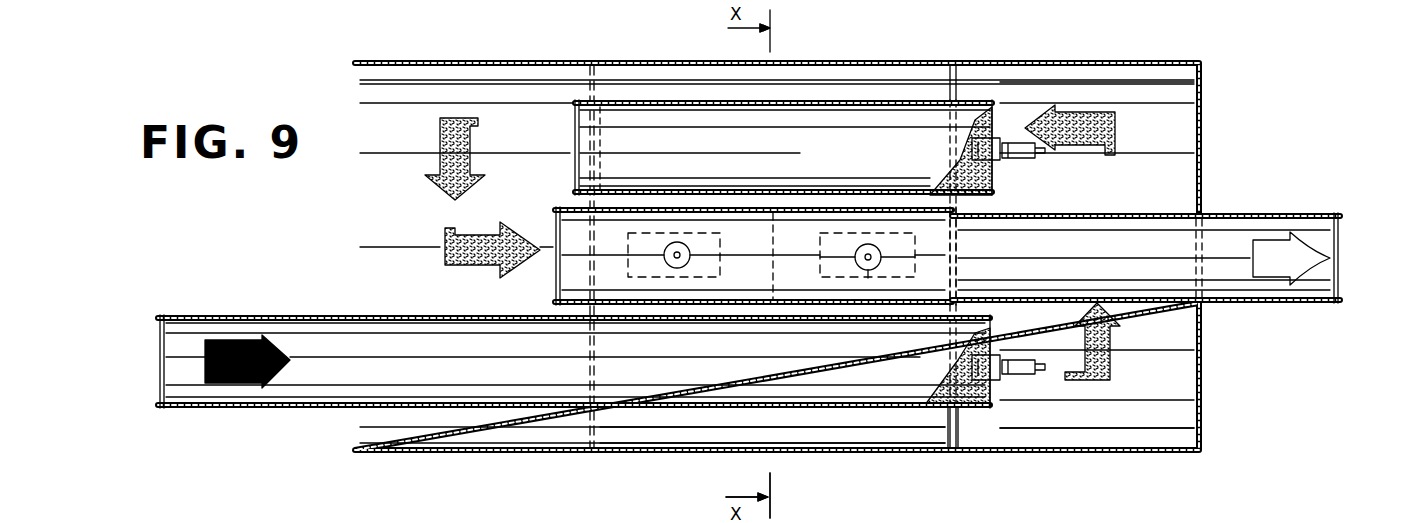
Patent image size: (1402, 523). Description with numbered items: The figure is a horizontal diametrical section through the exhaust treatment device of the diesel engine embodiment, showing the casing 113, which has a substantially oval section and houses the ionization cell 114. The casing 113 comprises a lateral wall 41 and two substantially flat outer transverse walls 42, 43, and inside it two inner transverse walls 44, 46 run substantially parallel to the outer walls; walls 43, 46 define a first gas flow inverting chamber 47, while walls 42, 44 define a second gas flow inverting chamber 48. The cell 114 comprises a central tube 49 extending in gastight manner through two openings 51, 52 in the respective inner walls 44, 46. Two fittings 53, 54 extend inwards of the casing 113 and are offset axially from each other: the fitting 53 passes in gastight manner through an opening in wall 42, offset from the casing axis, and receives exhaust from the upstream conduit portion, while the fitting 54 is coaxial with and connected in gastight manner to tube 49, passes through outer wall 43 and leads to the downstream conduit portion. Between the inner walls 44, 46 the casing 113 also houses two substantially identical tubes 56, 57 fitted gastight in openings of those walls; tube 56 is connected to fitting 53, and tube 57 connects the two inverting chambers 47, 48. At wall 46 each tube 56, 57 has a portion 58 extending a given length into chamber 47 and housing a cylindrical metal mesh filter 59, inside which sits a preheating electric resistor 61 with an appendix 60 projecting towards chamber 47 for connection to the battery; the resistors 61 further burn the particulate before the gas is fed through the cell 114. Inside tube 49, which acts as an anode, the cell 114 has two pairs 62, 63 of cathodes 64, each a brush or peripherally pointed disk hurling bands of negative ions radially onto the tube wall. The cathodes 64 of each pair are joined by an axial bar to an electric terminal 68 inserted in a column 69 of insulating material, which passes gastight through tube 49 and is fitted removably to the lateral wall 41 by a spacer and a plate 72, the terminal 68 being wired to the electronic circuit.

The lateral wall 41 is at (548, 62).
The outer transverse wall 42 is at (354, 252).
The outer transverse wall 43 is at (1200, 338).
The inner transverse wall 44 is at (596, 447).
The inner transverse wall 46 is at (968, 430).
The first gas flow inverting chamber 47 is at (1135, 430).
The second gas flow inverting chamber 48 is at (375, 82).
The central tube 49 is at (690, 447).
The opening 51 is at (575, 207).
The opening 52 is at (965, 207).
The fitting 53 is at (260, 410).
The fitting 54 is at (1290, 305).
The tube 56 is at (820, 412).
The tube 57 is at (818, 100).
The tube portion 58 is at (928, 100).
The cylindrical metal mesh filter 59 is at (950, 160).
The appendix 60 is at (1045, 150).
The electric resistor 61 is at (1000, 138).
The pair of cathodes 62 is at (673, 270).
The pair of cathodes 63 is at (866, 272).
The cathode 64 is at (620, 260).
The electric terminal 68 is at (1082, 516).
The column 69 is at (875, 268).
The plate 72 is at (628, 190).
The casing 113 is at (1068, 62).
The ionization cell 114 is at (745, 207).